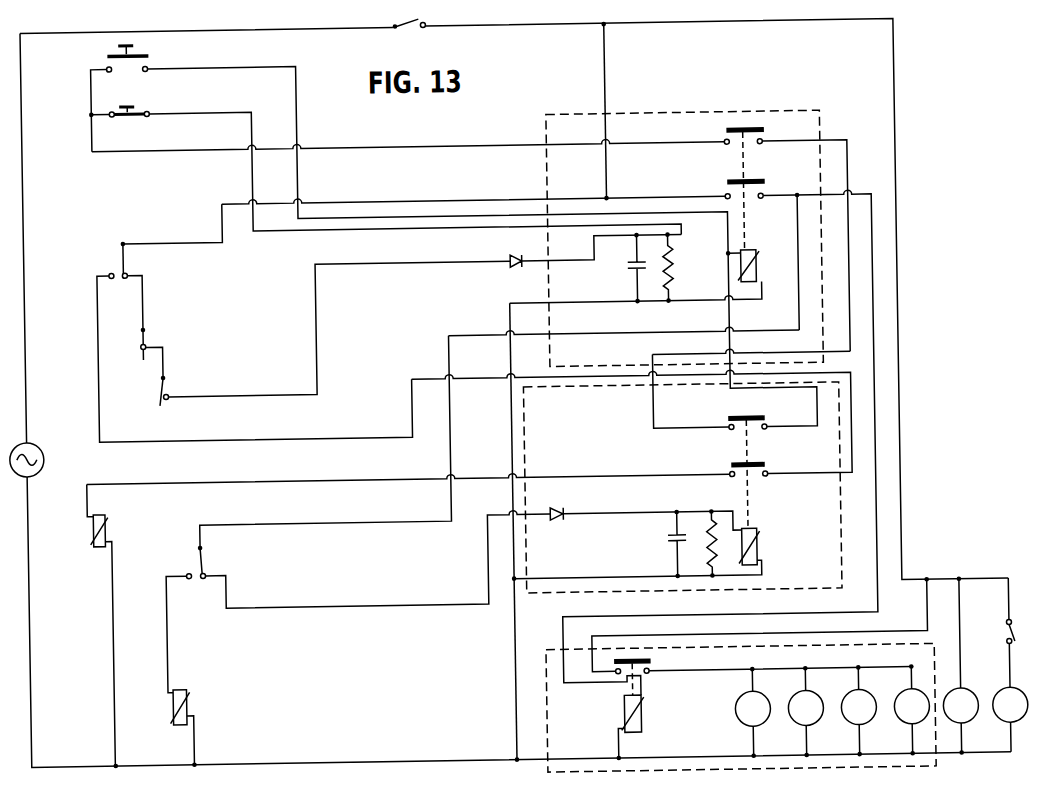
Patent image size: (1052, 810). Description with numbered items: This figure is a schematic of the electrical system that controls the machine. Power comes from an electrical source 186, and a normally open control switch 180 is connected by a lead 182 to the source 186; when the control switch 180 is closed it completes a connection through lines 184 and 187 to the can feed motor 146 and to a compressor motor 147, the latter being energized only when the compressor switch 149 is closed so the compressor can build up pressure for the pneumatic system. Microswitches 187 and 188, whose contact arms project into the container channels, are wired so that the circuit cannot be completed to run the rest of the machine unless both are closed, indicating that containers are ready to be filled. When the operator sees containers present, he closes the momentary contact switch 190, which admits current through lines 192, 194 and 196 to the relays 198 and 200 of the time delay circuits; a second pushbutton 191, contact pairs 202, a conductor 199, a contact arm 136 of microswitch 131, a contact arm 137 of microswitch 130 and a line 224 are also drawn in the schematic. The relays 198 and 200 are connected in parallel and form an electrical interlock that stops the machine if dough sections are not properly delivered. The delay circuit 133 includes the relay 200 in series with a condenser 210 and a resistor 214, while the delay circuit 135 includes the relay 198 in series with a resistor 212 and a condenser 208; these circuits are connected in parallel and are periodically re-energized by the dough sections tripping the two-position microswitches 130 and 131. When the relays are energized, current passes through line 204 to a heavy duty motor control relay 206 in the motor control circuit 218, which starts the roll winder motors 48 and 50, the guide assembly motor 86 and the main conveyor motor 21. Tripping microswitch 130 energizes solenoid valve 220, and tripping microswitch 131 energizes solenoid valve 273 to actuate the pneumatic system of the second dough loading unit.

The control switch 180 is at (398, 28).
The momentary contact switch 190 is at (110, 55).
The stop pushbutton 191 is at (126, 124).
The microswitch 131 is at (120, 264).
The contact arm 136 is at (121, 278).
The microswitch 187 is at (137, 350).
The microswitch 188 is at (157, 399).
The lead 182 is at (22, 392).
The electrical source 186 is at (30, 448).
The line 192 is at (192, 248).
The line 194 is at (311, 375).
The line 196 is at (493, 208).
The relay contacts 202 is at (667, 208).
The relay 198 is at (754, 289).
The condenser 208 is at (626, 277).
The resistor 212 is at (670, 286).
The electronic time delay circuit 135 is at (818, 375).
The conductor 199 is at (504, 512).
The resistor 214 is at (705, 533).
The condenser 210 is at (665, 550).
The relay 200 is at (750, 555).
The electronic time delay circuit 133 is at (549, 604).
The line 204 is at (867, 549).
The solenoid valve 273 is at (99, 514).
The microswitch 130 is at (196, 569).
The contact arm 137 is at (197, 580).
The conductor 224 is at (321, 612).
The solenoid valve 220 is at (165, 726).
The heavy duty motor control relay 206 is at (614, 725).
The roll winder motor 48 is at (756, 735).
The roll winder motor 50 is at (808, 735).
The guide assembly motor 86 is at (861, 735).
The main conveyor motor 21 is at (912, 731).
The can feed motor 146 is at (965, 711).
The compressor motor 147 is at (988, 733).
The compressor switch 149 is at (997, 637).
The motor control circuit 218 is at (769, 713).
The line 184 is at (380, 768).